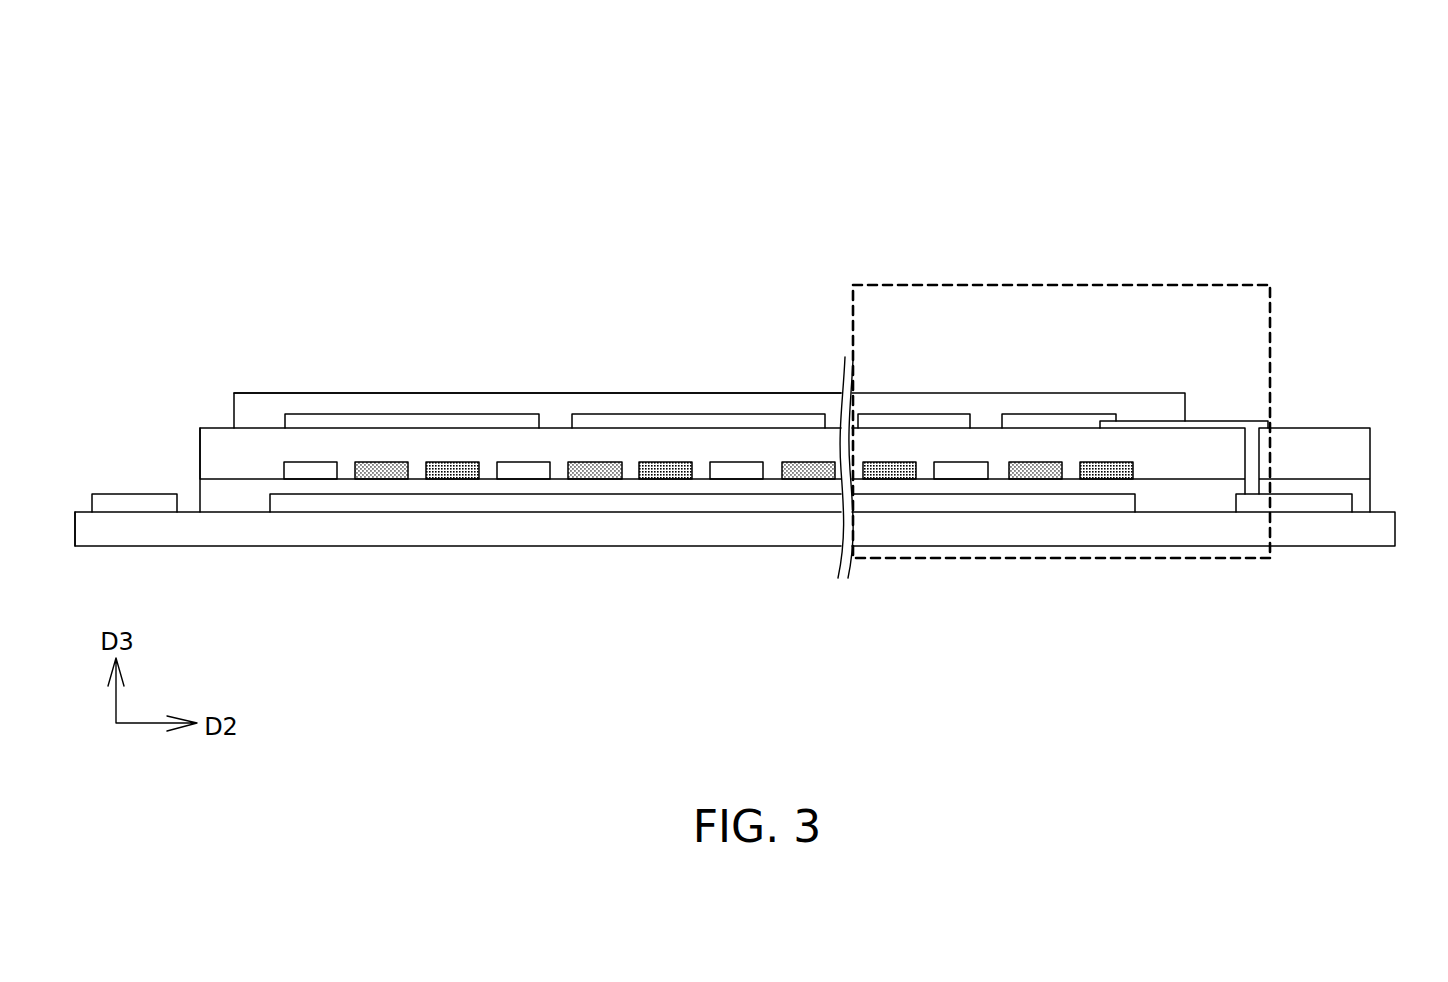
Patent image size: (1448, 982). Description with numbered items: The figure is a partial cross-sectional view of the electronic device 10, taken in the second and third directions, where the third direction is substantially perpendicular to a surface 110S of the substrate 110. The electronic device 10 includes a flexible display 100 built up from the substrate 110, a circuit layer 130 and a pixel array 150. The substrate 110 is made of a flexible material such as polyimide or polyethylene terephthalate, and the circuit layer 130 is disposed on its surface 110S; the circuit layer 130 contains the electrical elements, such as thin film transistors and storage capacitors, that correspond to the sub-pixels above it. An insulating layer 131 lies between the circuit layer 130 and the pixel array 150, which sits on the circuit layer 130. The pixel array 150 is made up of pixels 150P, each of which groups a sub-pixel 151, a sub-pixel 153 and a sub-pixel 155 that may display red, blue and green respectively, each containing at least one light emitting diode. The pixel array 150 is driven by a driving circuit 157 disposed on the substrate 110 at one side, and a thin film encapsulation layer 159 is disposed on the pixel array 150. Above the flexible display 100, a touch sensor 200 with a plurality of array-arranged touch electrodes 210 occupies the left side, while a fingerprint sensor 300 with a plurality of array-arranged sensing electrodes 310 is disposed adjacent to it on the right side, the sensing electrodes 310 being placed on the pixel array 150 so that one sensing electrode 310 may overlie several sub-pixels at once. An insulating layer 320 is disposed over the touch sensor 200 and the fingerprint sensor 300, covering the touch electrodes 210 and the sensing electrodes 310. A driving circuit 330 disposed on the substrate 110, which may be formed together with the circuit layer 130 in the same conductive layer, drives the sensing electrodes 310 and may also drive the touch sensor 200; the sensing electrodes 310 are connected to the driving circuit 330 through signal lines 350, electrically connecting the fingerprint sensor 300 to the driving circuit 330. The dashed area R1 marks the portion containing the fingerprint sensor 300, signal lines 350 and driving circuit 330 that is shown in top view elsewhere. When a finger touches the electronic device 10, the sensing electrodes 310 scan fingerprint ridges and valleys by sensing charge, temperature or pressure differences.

The electronic device 10 is at (1312, 172).
The flexible display 100 is at (1378, 546).
The substrate 110 is at (484, 530).
The surface of substrate 110S is at (83, 508).
The circuit layer 130 is at (690, 505).
The insulating layer 131 is at (590, 497).
The pixel array 150 is at (662, 198).
The pixel 150P is at (480, 252).
The sub-pixel 151 is at (312, 468).
The sub-pixel 153 is at (383, 468).
The sub-pixel 155 is at (454, 468).
The driving circuit 157 is at (136, 502).
The thin film encapsulation layer 159 is at (255, 458).
The touch sensor 200 is at (274, 394).
The touch electrodes 210 is at (300, 418).
The fingerprint sensor 300 is at (1105, 390).
The sensing electrodes 310 is at (926, 420).
The insulating layer 320 is at (808, 403).
The driving circuit 330 is at (1310, 503).
The signal lines 350 is at (1218, 423).
The area R1 is at (1010, 283).